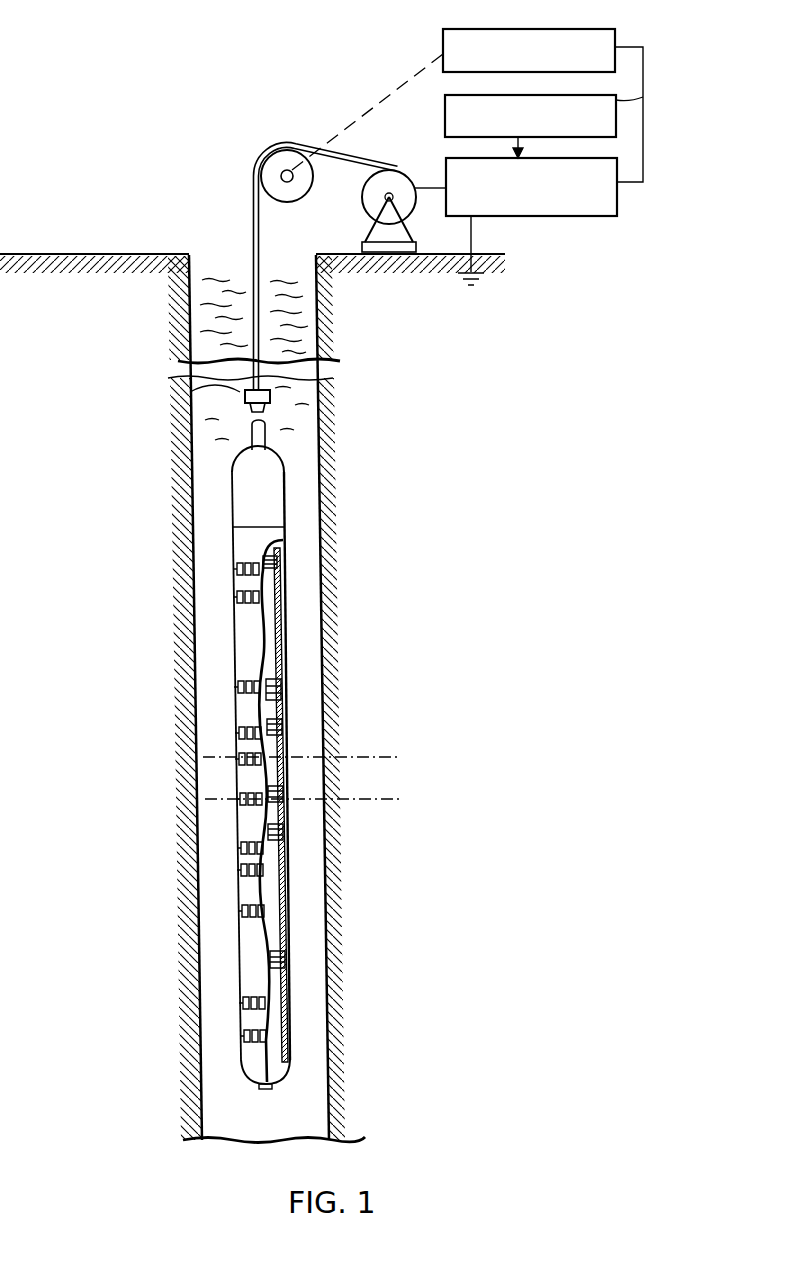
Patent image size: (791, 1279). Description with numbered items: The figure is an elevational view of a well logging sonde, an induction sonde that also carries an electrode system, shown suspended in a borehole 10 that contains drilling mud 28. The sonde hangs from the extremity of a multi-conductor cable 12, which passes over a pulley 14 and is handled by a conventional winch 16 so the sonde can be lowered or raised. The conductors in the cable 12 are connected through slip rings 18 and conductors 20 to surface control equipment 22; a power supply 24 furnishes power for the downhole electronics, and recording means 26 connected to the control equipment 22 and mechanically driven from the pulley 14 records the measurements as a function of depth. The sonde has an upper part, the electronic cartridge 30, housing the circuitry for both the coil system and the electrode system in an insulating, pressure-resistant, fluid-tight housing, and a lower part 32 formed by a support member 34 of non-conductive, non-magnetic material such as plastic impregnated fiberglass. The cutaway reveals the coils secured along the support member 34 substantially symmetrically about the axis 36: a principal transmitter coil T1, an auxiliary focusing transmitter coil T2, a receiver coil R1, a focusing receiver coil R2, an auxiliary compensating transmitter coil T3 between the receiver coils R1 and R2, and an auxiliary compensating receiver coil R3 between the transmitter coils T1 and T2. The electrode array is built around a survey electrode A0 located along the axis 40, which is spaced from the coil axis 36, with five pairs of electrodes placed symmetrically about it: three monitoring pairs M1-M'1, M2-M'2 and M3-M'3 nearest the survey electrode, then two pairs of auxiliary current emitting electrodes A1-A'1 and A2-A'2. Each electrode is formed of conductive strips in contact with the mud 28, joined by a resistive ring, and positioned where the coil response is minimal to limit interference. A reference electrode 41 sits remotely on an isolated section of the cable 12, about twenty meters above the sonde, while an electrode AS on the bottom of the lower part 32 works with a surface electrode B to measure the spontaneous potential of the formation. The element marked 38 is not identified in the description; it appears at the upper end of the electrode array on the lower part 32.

The borehole 10 is at (323, 595).
The multi-conductor cable 12 is at (254, 216).
The pulley 14 is at (273, 149).
The winch 16 is at (404, 169).
The slip rings 18 is at (380, 199).
The conductors 20 is at (432, 190).
The surface control equipment 22 is at (617, 204).
The power supply 24 is at (643, 97).
The recording means 26 is at (586, 32).
The drilling mud 28 is at (324, 324).
The electronic cartridge 30 is at (283, 470).
The lower part of the sonde 32 is at (247, 633).
The support member 34 is at (283, 656).
The axis of the coil system 36 is at (343, 757).
The sensor array 38 is at (247, 560).
The axis of the electrode system 40 is at (385, 797).
The reference electrode 41 is at (187, 393).
The auxiliary current emitting electrode A1 is at (204, 588).
The auxiliary current emitting electrode A2 is at (205, 560).
The survey electrode A0 is at (260, 799).
The auxiliary current emitting electrode A'1 is at (205, 1004).
The auxiliary current emitting electrode A'2 is at (206, 1040).
The bottom electrode AS is at (272, 1089).
The monitoring electrode M1 is at (202, 746).
The monitoring electrode M2 is at (202, 719).
The monitoring electrode M3 is at (201, 682).
The monitoring electrode M'1 is at (203, 846).
The monitoring electrode M'2 is at (203, 872).
The monitoring electrode M'3 is at (203, 908).
The receiver coil R1 is at (283, 790).
The focusing receiver coil R2 is at (285, 958).
The auxiliary compensating receiver coil R3 is at (283, 690).
The principal transmitter coil T1 is at (283, 727).
The auxiliary focusing transmitter coil T2 is at (283, 560).
The auxiliary compensating transmitter coil T3 is at (285, 836).
The surface electrode B is at (488, 275).